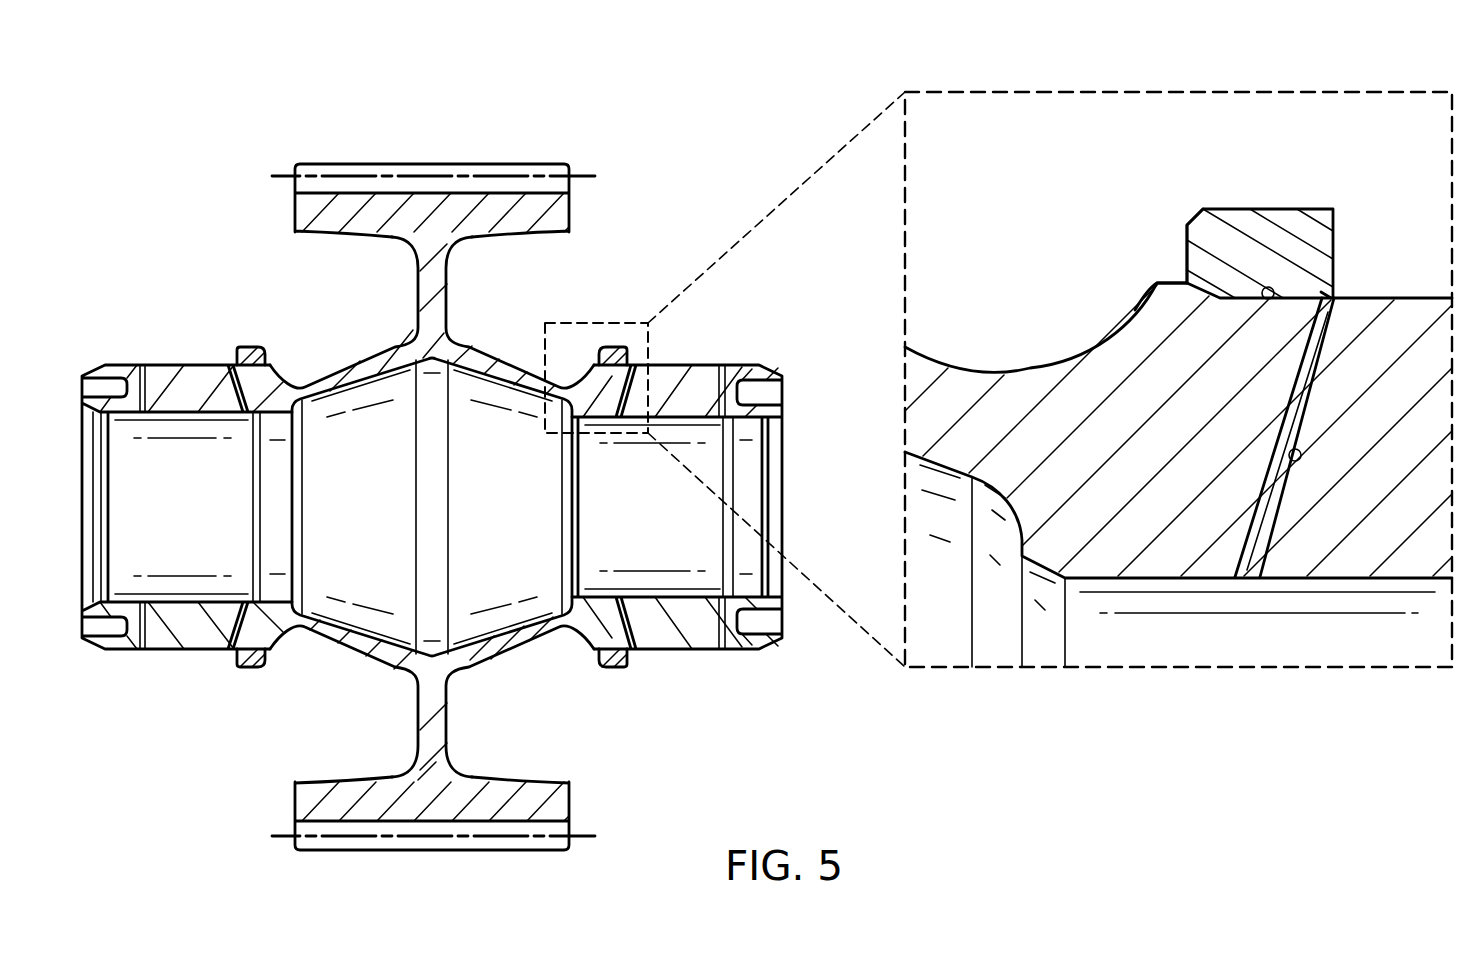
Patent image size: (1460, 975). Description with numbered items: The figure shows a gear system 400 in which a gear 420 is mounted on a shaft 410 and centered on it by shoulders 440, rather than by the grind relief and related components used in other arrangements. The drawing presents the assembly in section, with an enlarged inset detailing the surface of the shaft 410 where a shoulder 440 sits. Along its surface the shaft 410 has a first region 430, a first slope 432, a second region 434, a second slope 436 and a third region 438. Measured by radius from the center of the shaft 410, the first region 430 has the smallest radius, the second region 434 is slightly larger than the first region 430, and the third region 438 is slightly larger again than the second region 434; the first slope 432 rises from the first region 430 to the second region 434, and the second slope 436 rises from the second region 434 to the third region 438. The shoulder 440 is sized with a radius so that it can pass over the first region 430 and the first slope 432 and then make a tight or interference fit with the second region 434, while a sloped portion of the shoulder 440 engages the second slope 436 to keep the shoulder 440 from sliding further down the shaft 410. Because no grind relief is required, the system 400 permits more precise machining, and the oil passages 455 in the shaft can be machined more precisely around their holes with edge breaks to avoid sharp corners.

The gear system 400 is at (308, 95).
The shaft 410 is at (188, 363).
The gear 420 is at (432, 163).
The first region 430 is at (1370, 298).
The first slope 432 is at (1322, 292).
The second region 434 is at (1268, 300).
The second slope 436 is at (1187, 266).
The third region 438 is at (1157, 283).
The shoulder 440 is at (1282, 209).
The oil passages 455 is at (1301, 457).